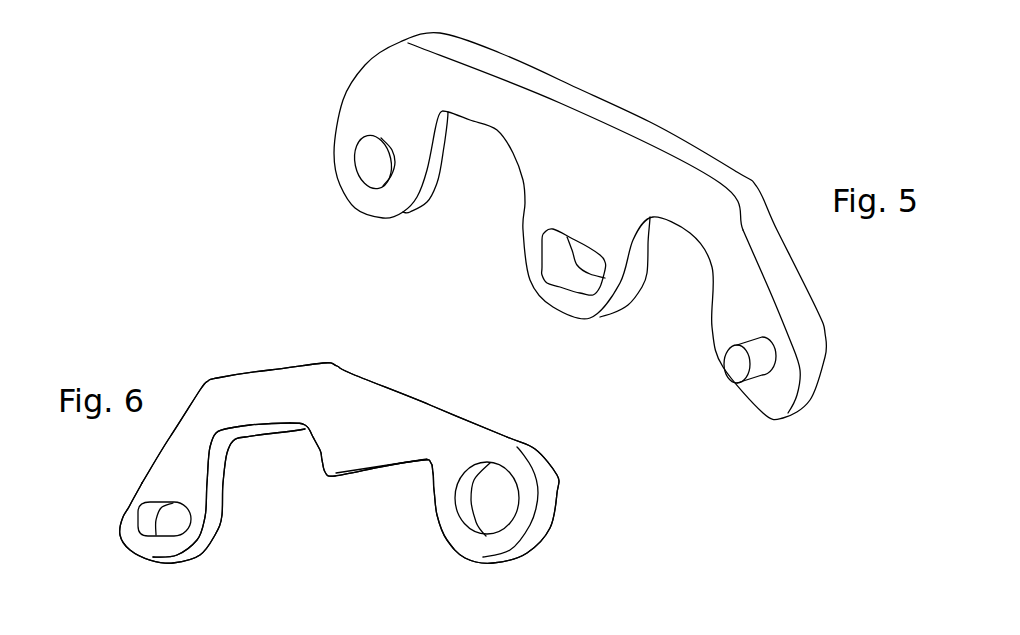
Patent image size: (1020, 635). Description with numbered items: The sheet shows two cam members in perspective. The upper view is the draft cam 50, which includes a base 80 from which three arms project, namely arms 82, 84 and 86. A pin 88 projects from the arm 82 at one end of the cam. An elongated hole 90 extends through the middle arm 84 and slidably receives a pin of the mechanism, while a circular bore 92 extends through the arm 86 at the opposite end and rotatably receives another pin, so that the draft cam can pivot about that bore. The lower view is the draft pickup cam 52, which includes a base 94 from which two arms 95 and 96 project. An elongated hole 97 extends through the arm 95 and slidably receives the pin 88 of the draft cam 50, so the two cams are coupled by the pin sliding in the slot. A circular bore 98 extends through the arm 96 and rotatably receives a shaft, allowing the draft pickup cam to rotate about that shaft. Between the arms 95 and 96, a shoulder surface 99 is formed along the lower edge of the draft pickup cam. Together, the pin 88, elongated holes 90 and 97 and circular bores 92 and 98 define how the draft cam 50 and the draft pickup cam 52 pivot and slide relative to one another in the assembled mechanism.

In FIG. 5, the draft cam 50 is at (715, 138).
In FIG. 5, the base 80 is at (563, 120).
In FIG. 5, the arm 82 is at (768, 400).
In FIG. 5, the arm 84 is at (557, 293).
In FIG. 5, the arm 86 is at (353, 183).
In FIG. 5, the pin 88 is at (733, 363).
In FIG. 5, the elongated hole 90 is at (553, 250).
In FIG. 5, the circular bore 92 is at (366, 146).
In FIG. 6, the draft pickup cam 52 is at (215, 370).
In FIG. 6, the base 94 is at (278, 383).
In FIG. 6, the arm 95 is at (202, 552).
In FIG. 6, the arm 96 is at (530, 540).
In FIG. 6, the elongated hole 97 is at (180, 518).
In FIG. 6, the circular bore 98 is at (487, 486).
In FIG. 6, the shoulder surface 99 is at (392, 468).